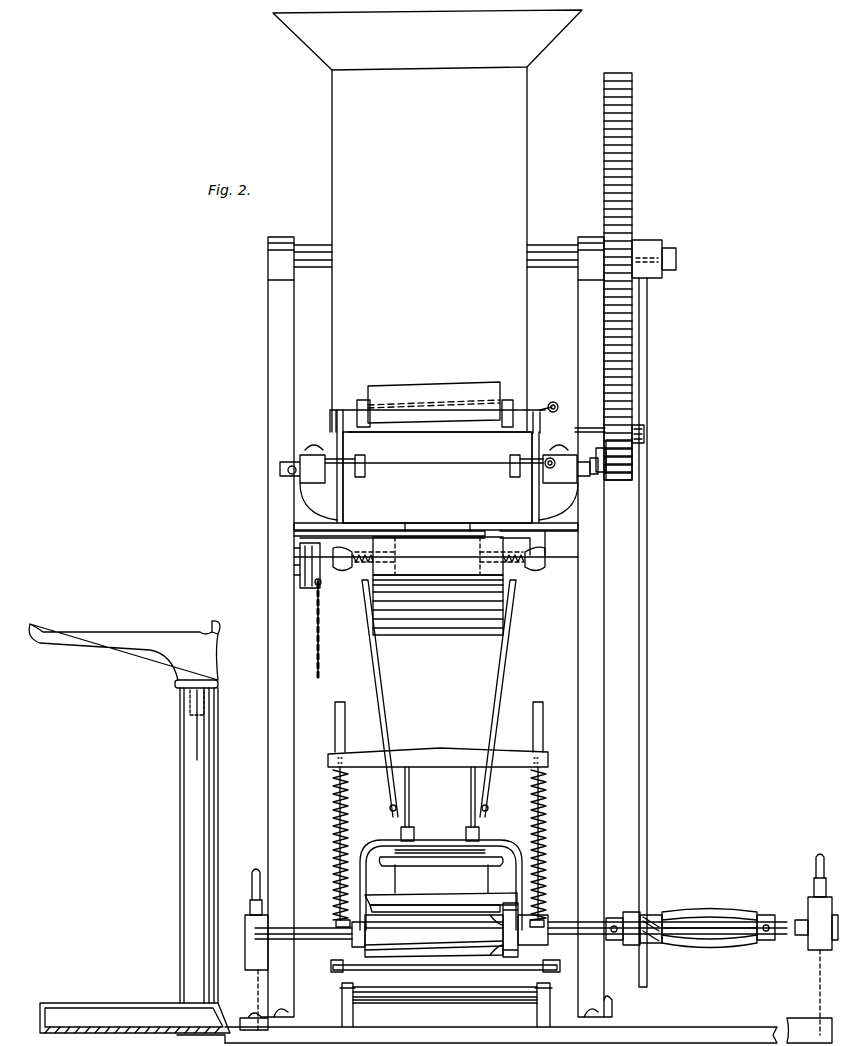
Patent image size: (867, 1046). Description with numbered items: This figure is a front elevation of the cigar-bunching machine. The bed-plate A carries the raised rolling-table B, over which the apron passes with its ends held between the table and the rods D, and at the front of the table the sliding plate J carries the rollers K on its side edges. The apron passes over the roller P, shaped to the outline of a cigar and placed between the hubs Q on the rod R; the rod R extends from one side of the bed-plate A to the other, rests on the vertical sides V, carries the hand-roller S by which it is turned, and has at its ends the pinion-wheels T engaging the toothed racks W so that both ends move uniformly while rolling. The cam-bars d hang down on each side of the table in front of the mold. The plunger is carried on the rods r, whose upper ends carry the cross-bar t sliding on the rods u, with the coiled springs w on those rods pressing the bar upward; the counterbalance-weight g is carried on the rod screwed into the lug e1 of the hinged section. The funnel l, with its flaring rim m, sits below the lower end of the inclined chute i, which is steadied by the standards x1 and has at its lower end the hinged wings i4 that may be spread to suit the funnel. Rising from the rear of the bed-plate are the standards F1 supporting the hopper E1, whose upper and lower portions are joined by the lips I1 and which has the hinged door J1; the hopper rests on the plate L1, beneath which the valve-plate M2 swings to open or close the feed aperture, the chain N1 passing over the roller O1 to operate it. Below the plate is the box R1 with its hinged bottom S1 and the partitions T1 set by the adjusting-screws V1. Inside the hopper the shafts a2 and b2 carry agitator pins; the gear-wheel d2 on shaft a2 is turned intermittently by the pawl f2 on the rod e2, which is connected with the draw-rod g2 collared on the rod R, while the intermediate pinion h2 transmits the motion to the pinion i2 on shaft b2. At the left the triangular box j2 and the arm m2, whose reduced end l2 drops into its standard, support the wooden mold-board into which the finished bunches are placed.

The hopper E1 is at (427, 221).
The standards F1 is at (437, 627).
The horizontal shaft a2 is at (322, 262).
The gear-wheel d2 is at (640, 276).
The rod e2 is at (647, 493).
The lips I1 is at (444, 407).
The hinged door J1 is at (435, 470).
The plate L1 is at (439, 535).
The standards x1 is at (420, 543).
The valve-plate M2 is at (300, 543).
The box R1 is at (436, 556).
The vertical partitions T1 is at (375, 753).
The adjusting-screws V1 is at (439, 565).
The roller O1 is at (322, 584).
The chain N1 is at (329, 628).
The hinged bottom S1 is at (438, 605).
The inclined chute i is at (439, 736).
The rods u is at (436, 727).
The cross-bar t is at (438, 757).
The coiled springs w is at (332, 830).
The rods r is at (440, 797).
The hinged side wings i4 is at (450, 823).
The counterbalance-weight g is at (441, 885).
The flaring rim m is at (441, 898).
The funnel l is at (435, 907).
The roller P is at (441, 930).
The hubs Q is at (450, 931).
The rod R is at (571, 947).
The plate J is at (433, 968).
The rollers K is at (446, 965).
The cam-bars d is at (556, 980).
The rolling-table B is at (445, 979).
The rods D is at (445, 1007).
The bed-plate A is at (504, 1030).
The triangular-shaped box j2 is at (102, 1012).
The horizontal arm m2 is at (148, 825).
The reduced end l2 is at (220, 697).
The intermediate pinion-wheel h2 is at (190, 868).
The pinion i2 is at (614, 466).
The horizontal shaft b2 is at (594, 476).
The pawl f2 is at (644, 433).
The toothed racks W is at (529, 884).
The pinion-wheels T is at (821, 922).
The vertical sides V is at (539, 987).
The hand-roller S is at (718, 920).
The lug e1 is at (631, 910).
The draw-rod g2 is at (654, 915).